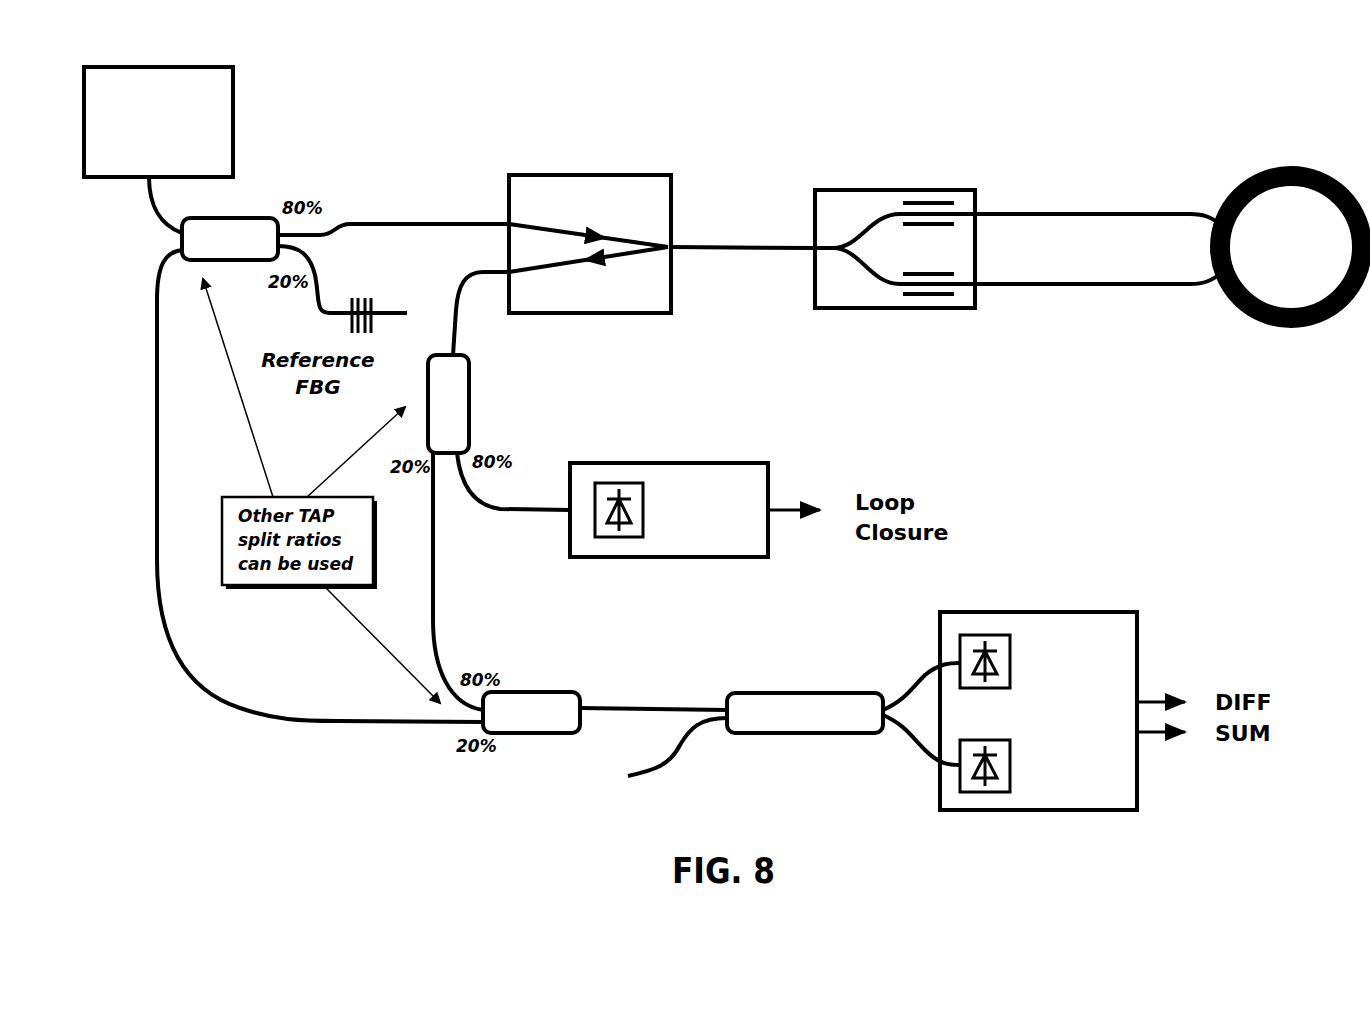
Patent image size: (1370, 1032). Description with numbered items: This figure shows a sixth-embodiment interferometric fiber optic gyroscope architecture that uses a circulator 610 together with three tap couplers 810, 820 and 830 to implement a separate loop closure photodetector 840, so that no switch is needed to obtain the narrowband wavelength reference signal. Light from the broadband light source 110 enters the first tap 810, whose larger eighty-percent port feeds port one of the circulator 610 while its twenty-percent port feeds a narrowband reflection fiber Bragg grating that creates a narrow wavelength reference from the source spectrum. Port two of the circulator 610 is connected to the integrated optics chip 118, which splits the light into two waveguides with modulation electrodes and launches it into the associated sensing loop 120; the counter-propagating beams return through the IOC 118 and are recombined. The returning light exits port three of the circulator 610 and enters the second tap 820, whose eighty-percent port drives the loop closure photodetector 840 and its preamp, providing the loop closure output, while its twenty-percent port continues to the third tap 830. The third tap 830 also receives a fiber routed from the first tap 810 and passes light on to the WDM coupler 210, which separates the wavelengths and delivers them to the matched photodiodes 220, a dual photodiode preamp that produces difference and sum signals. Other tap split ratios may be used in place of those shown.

The light source 110 is at (233, 131).
The tap 810 is at (233, 215).
The circulator 610 is at (593, 175).
The tap 820 is at (470, 412).
The loop closure photo detector 840 is at (687, 463).
The integrated optics chip (IOC) 118 is at (848, 190).
The sensing loop 120 is at (1250, 175).
The tap 830 is at (533, 692).
The WDM coupler 210 is at (795, 693).
The matched photodiodes 220 is at (1042, 612).